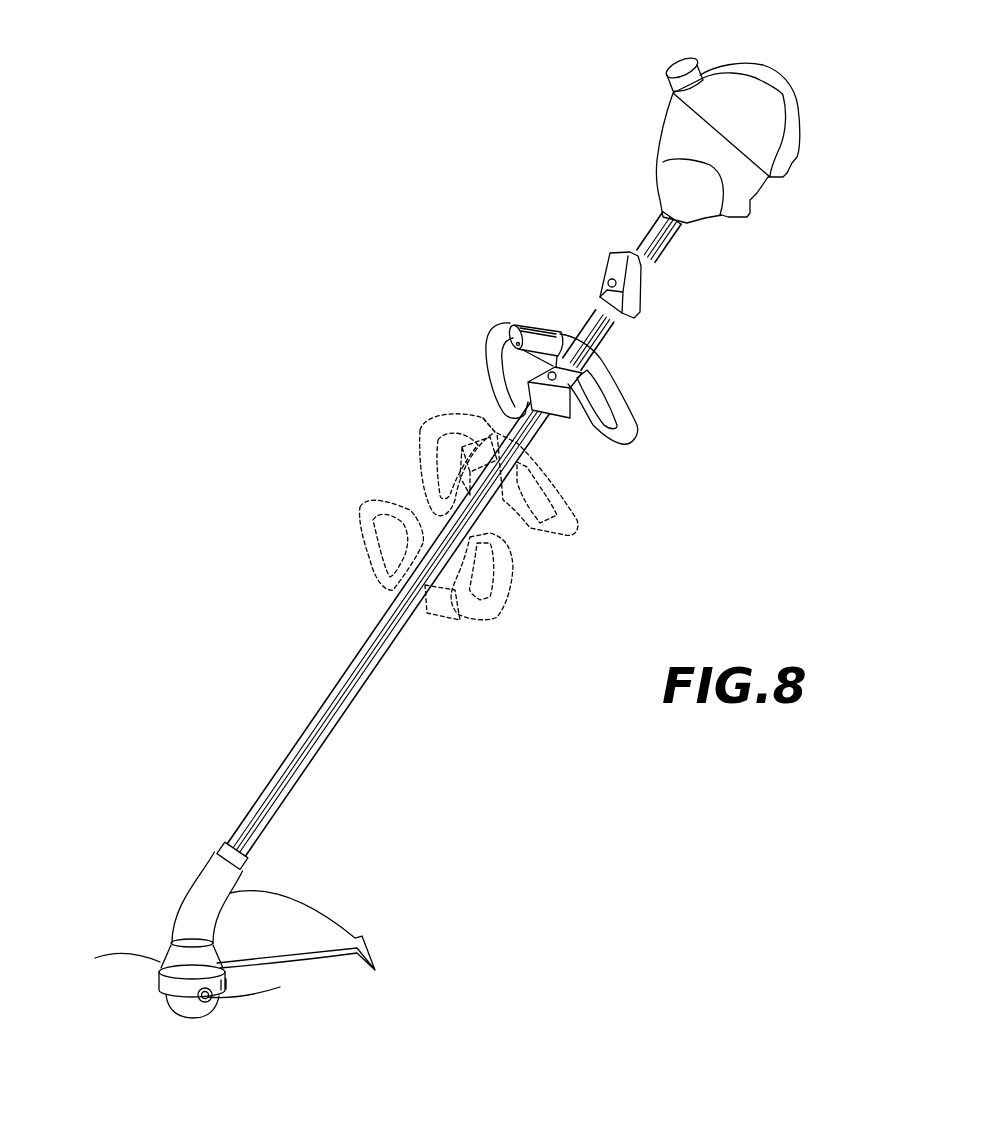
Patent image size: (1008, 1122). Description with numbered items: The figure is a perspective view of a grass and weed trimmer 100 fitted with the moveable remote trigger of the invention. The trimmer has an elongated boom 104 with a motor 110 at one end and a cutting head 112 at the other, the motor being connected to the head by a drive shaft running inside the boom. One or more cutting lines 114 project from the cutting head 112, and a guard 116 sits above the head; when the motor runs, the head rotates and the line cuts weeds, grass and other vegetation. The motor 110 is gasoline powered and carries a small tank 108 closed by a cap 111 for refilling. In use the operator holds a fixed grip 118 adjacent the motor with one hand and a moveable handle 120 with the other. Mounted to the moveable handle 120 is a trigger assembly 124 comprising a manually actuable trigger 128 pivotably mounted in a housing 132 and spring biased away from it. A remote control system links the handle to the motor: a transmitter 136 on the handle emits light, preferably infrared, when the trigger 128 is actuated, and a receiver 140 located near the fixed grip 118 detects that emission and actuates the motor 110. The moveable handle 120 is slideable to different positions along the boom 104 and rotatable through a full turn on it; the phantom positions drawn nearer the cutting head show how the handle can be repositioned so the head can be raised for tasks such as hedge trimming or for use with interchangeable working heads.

The grass and weed trimmer 100 is at (692, 437).
The elongated boom 104 is at (547, 426).
The tank 108 is at (743, 72).
The motor 110 is at (763, 140).
The cap 111 is at (690, 58).
The cutting head 112 is at (170, 997).
The cutting line 114 is at (123, 953).
The guard 116 is at (298, 910).
The fixed grip 118 is at (670, 244).
The moveable handle 120 is at (617, 393).
The trigger assembly 124 is at (540, 309).
The trigger 128 is at (490, 380).
The housing 132 is at (510, 330).
The transmitter 136 is at (557, 374).
The receiver 140 is at (608, 284).